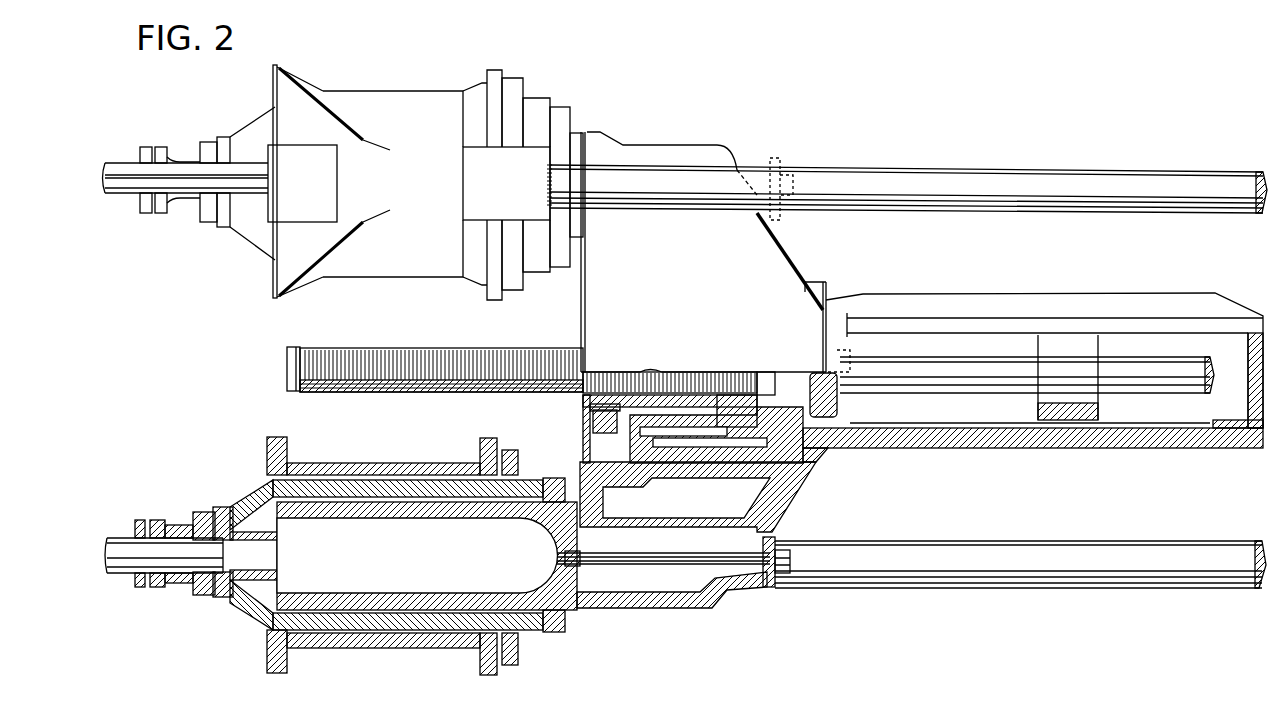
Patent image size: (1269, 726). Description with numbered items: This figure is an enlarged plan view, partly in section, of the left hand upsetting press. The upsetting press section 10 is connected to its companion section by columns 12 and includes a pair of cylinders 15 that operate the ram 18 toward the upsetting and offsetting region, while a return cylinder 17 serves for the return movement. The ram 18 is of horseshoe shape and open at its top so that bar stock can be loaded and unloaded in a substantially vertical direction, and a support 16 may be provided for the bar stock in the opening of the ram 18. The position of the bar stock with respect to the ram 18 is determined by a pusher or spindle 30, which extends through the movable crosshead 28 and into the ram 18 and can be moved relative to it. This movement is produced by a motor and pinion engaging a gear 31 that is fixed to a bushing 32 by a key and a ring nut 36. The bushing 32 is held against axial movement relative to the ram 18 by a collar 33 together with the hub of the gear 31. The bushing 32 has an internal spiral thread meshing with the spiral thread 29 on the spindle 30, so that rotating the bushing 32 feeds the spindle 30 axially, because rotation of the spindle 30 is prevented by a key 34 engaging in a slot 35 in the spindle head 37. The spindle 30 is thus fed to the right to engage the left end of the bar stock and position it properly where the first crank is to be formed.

The upsetting press section 10 is at (647, 138).
The column 12 is at (1013, 186).
The cylinder 15 is at (247, 138).
The support 16 is at (1090, 422).
The return cylinder 17 is at (183, 157).
The ram 18 is at (938, 448).
The movable crosshead 28 is at (600, 292).
The spiral thread 29 is at (384, 368).
The spindle 30 is at (357, 394).
The gear 31 is at (600, 436).
The bushing 32 is at (583, 397).
The collar 33 is at (750, 413).
The key 34 is at (906, 428).
The slot 35 is at (833, 449).
The ring nut 36 is at (598, 418).
The spindle head 37 is at (838, 408).